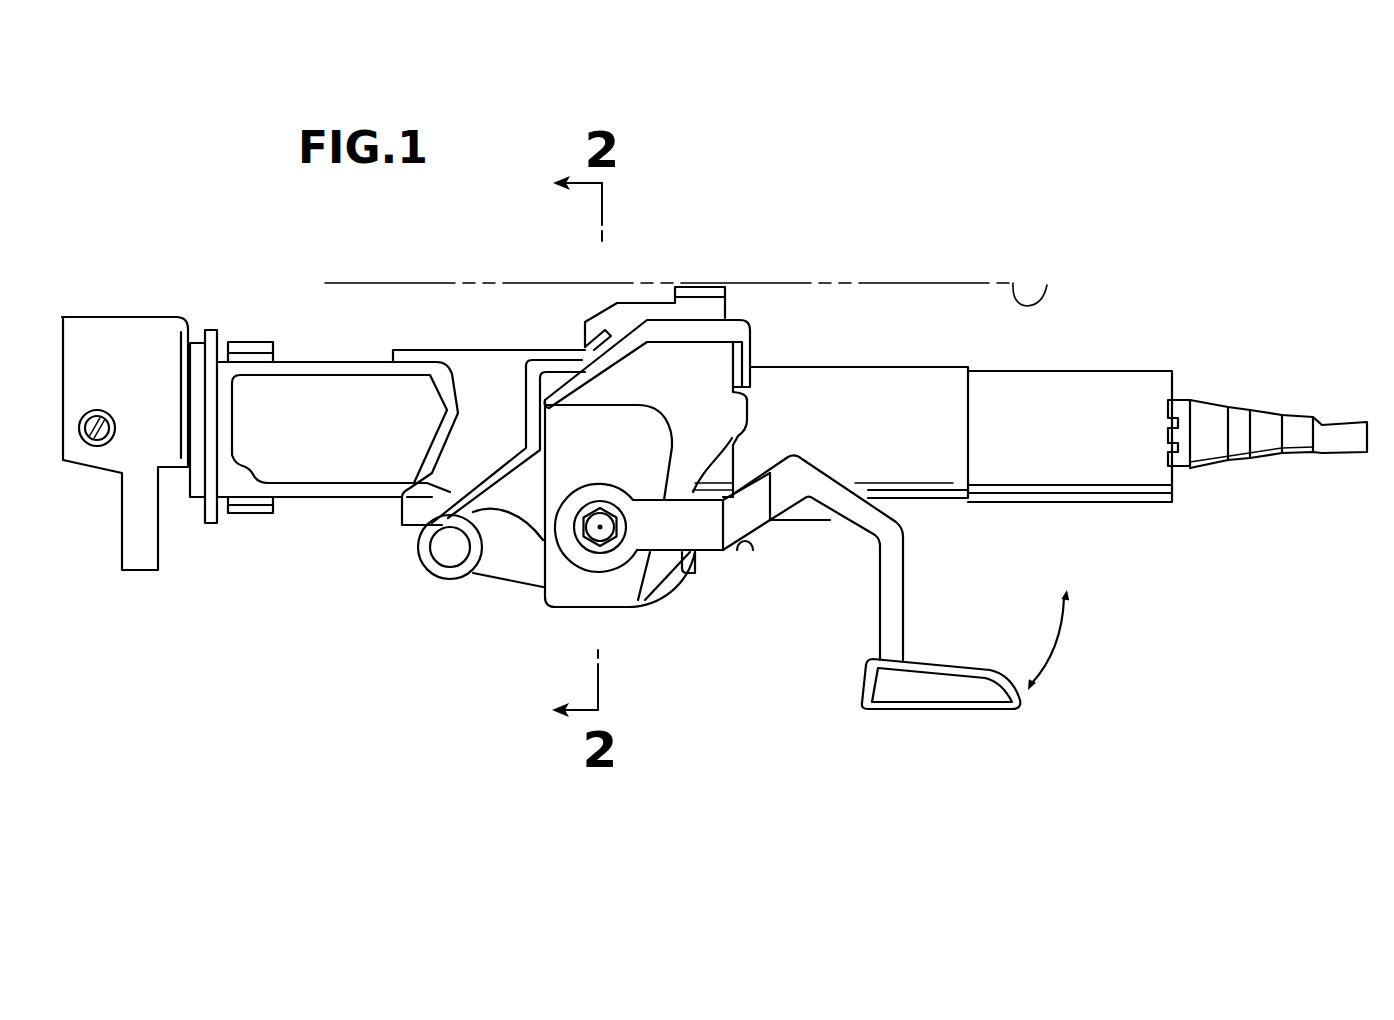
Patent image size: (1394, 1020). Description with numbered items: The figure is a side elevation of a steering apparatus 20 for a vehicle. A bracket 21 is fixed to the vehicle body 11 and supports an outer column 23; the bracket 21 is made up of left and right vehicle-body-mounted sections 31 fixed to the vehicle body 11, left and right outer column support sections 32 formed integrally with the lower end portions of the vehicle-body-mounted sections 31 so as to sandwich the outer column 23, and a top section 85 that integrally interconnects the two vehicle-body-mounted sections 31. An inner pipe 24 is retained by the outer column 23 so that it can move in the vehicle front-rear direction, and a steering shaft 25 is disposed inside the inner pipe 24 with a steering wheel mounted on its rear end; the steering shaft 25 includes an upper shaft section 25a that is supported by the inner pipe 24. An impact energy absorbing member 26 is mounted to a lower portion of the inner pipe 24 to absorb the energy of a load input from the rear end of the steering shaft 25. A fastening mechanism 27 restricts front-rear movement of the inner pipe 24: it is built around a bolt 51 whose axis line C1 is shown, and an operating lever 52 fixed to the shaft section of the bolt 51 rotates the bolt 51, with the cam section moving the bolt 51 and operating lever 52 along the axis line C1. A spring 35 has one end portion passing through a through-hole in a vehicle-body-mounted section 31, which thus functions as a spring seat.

The steering apparatus 20 is at (1187, 243).
The vehicle body 11 is at (1047, 285).
The bracket 21 is at (642, 152).
The outer column 23 is at (522, 348).
The inner pipe 24 is at (878, 367).
The steering shaft 25 is at (1268, 412).
The upper shaft section 25a is at (1208, 440).
The impact energy absorbing member 26 is at (743, 552).
The fastening mechanism 27 is at (585, 555).
The vehicle-body-mounted section 31 is at (731, 325).
The outer column support section 32 is at (673, 368).
The spring 35 is at (442, 573).
The bolt 51 is at (625, 525).
The operating lever 52 is at (915, 695).
The top section 85 is at (643, 308).
The axis line C1 is at (600, 530).